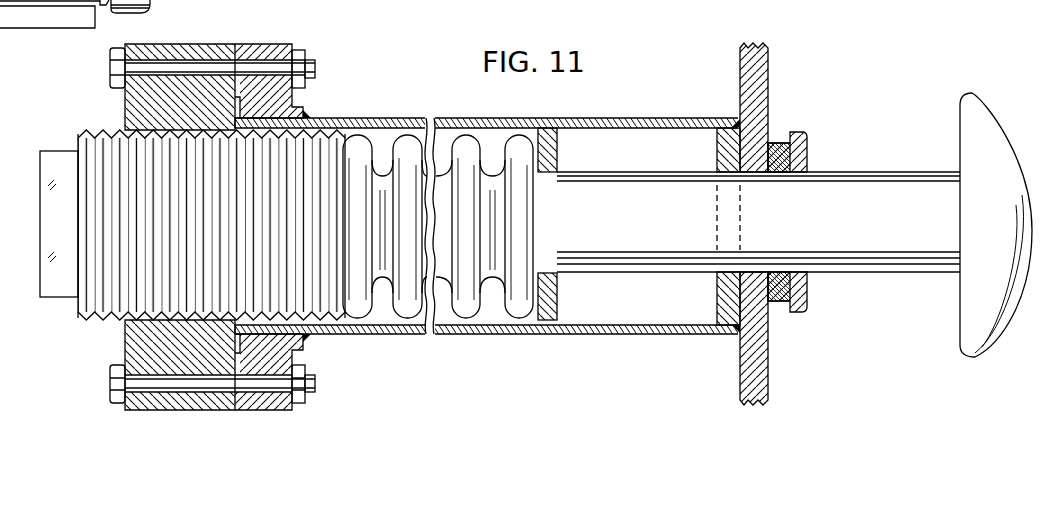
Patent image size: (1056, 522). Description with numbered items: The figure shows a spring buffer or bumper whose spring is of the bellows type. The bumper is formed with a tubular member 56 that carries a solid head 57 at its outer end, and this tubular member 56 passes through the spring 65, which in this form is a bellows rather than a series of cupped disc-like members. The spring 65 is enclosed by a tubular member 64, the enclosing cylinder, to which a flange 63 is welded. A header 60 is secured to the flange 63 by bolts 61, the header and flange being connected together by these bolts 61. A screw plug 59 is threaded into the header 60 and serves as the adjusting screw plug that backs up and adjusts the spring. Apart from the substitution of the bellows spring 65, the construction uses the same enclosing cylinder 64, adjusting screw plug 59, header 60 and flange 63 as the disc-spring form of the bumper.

The tubular member 56 is at (831, 192).
The solid head 57 is at (981, 144).
The screw plug 59 is at (88, 131).
The header 60 is at (205, 45).
The bolts 61 is at (315, 64).
The flange 63 is at (267, 45).
The tubular member 64 is at (448, 121).
The spring 65 is at (406, 306).